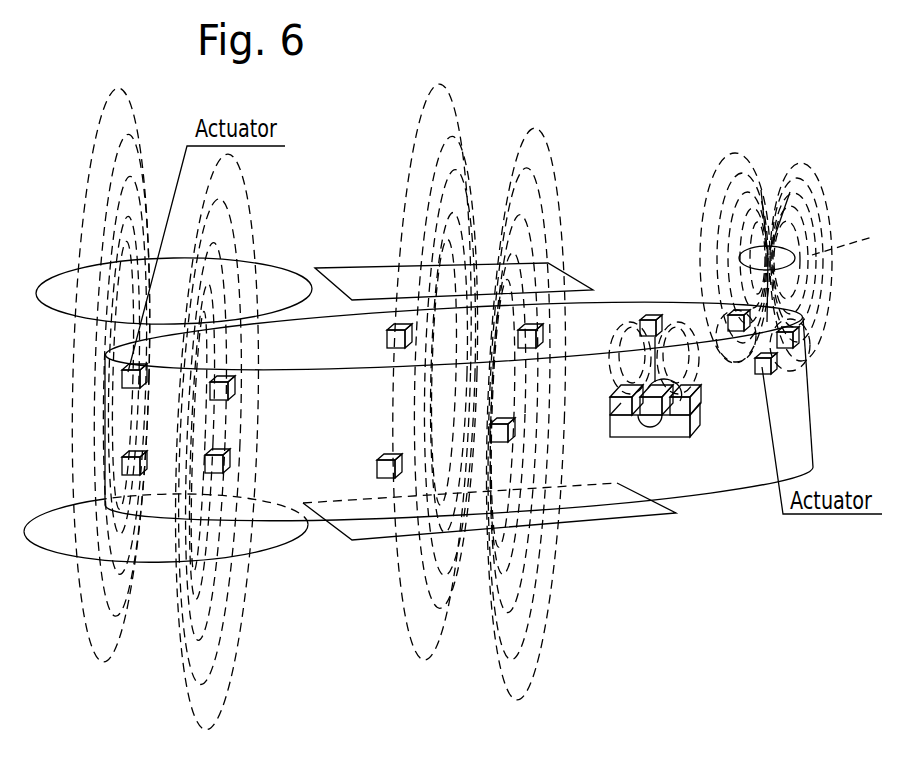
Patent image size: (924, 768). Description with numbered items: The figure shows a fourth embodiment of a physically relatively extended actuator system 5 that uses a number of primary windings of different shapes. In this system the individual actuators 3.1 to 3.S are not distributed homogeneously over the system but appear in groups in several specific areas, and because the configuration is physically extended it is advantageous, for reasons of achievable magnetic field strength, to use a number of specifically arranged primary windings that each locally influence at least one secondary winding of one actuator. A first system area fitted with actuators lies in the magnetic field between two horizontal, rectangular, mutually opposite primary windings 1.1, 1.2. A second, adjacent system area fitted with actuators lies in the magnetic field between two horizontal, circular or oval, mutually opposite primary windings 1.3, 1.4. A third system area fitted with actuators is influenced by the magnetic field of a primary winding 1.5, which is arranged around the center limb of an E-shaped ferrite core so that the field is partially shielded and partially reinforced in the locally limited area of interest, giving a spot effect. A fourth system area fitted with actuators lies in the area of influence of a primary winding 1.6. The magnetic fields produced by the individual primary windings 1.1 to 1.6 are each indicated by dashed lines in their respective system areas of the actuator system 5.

The primary winding 1.1 is at (352, 543).
The primary winding 1.2 is at (355, 268).
The primary winding 1.3 is at (272, 262).
The primary winding 1.4 is at (279, 552).
The primary winding 1.5 is at (653, 432).
The primary winding 1.6 is at (790, 240).
The actuator 3.1 is at (122, 378).
The actuator 3.S is at (780, 362).
The actuator system 5 is at (797, 397).